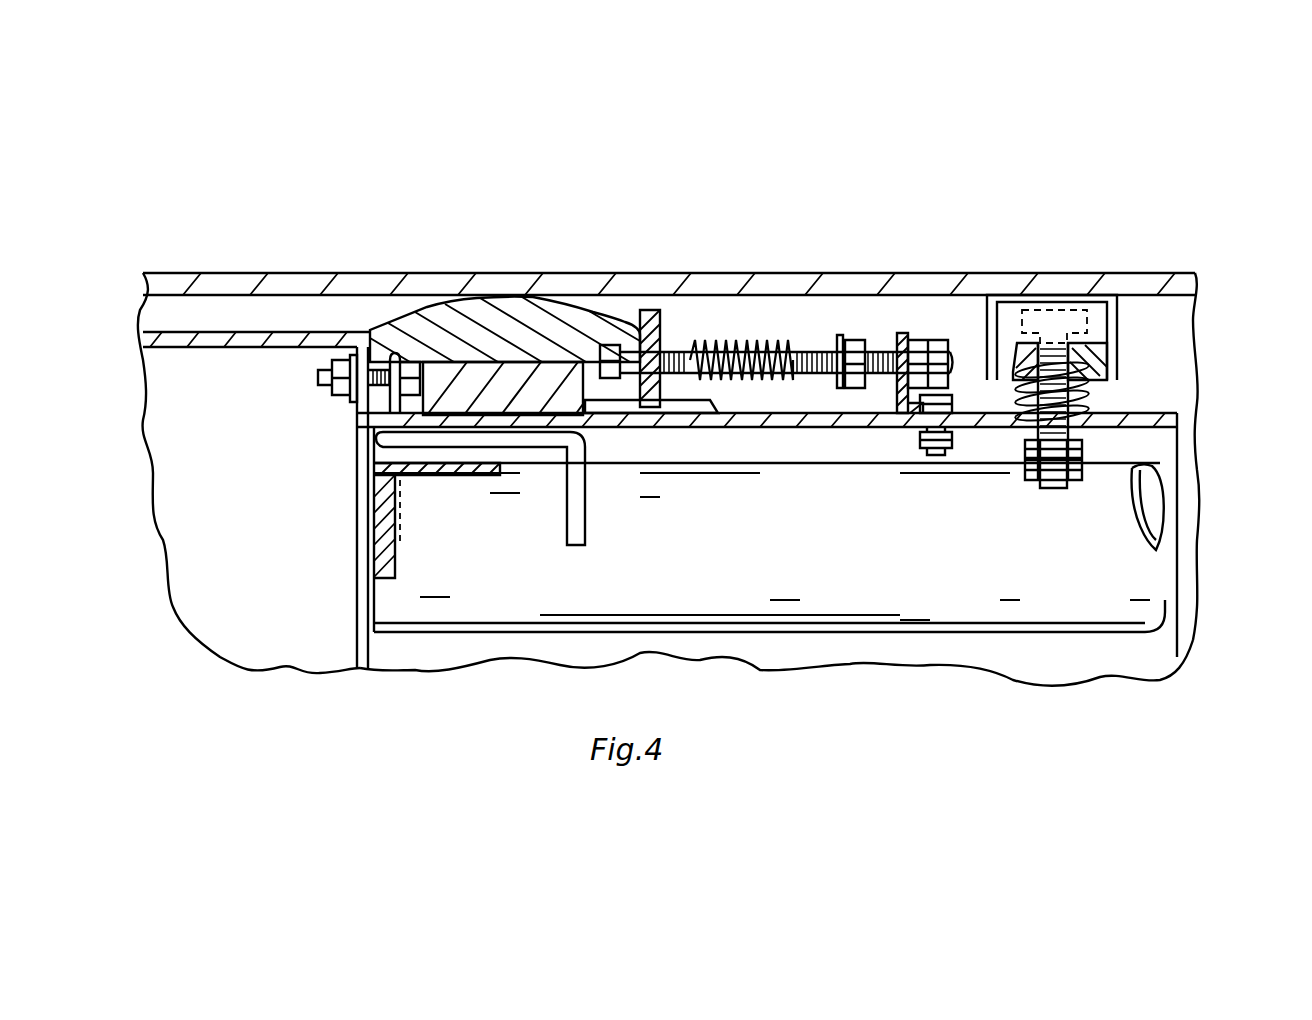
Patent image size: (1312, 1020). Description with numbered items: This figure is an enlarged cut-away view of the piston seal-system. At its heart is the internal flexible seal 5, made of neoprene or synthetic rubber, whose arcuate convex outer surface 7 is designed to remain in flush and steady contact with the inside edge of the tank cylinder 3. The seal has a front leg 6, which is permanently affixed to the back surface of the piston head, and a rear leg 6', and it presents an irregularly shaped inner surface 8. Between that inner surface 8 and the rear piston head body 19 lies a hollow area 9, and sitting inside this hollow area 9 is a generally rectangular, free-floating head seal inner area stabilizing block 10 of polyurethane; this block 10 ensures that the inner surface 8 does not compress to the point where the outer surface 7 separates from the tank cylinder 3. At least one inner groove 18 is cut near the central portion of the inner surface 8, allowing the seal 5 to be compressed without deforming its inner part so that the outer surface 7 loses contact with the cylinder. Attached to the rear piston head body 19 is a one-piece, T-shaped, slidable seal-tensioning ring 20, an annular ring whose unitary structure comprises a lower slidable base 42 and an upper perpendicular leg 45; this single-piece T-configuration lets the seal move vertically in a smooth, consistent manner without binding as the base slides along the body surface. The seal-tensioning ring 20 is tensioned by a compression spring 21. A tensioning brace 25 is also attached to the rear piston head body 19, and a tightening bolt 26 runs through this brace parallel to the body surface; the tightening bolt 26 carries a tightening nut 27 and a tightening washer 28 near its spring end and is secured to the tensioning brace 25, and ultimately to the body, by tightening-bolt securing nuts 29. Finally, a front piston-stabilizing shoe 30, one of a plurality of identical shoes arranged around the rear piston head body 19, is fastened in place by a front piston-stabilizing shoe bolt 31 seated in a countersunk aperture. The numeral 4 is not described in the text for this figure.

The tank cylinder 3 is at (228, 285).
The lower plate / support angle 4 is at (208, 357).
The flexible seal 5 is at (540, 322).
The front leg 6 is at (256, 459).
The rear leg 6' is at (764, 569).
The arcuate convex outer surface 7 is at (478, 338).
The inner surface 8 is at (470, 362).
The hollow area 9 is at (595, 345).
The head seal inner area stabilizing block 10 is at (510, 385).
The inner groove 18 is at (500, 350).
The rear piston head body 19 is at (857, 420).
The seal-tensioning ring 20 is at (813, 423).
The compression spring 21 is at (760, 347).
The tensioning brace 25 is at (907, 337).
The tightening bolt 26 is at (882, 338).
The tightening nut 27 is at (855, 338).
The tightening washer 28 is at (900, 427).
The tightening-bolt securing nuts 29 is at (940, 345).
The front piston-stabilizing shoe 30 is at (1095, 315).
The front piston-stabilizing shoe bolt 31 is at (1070, 428).
The lower slidable base 42 is at (640, 430).
The upper perpendicular leg 45 is at (655, 343).